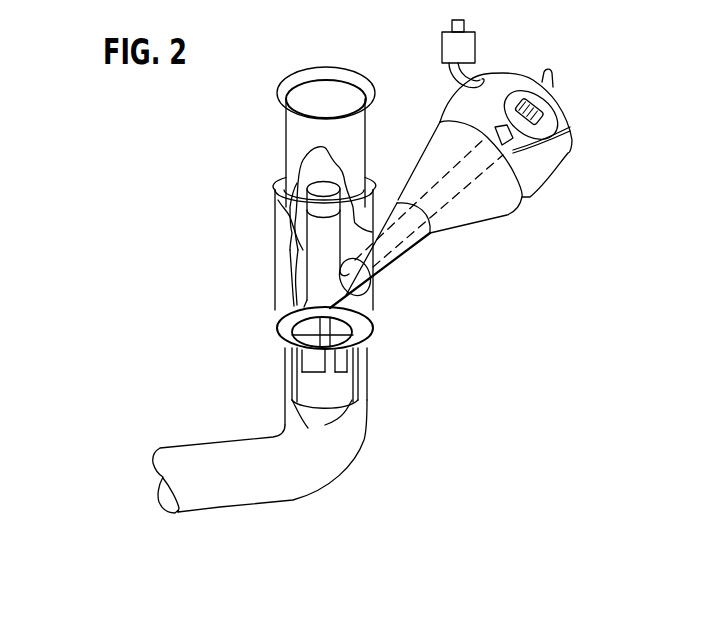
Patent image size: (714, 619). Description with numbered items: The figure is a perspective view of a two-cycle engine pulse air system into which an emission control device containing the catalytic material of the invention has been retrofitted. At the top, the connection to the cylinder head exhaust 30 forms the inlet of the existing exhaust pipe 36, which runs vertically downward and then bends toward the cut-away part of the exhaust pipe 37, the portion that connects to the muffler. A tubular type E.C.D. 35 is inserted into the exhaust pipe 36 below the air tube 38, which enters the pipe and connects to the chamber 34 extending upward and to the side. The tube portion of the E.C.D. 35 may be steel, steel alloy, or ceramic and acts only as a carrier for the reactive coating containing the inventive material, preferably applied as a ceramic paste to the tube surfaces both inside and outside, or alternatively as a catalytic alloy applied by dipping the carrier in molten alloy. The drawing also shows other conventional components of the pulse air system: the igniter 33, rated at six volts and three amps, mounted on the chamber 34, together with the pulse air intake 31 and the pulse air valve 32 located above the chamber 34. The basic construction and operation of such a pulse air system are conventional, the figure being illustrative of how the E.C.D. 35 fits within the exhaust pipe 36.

The connection to the cylinder head exhaust 30 is at (321, 70).
The pulse air intake 31 is at (462, 25).
The pulse air valve 32 is at (460, 51).
The igniter 33 is at (548, 105).
The chamber 34 is at (547, 160).
The E.C.D. 35 is at (338, 387).
The exhaust pipe 36 is at (285, 127).
The cut-away part of the exhaust pipe 37 is at (155, 482).
The air tube 38 is at (318, 247).